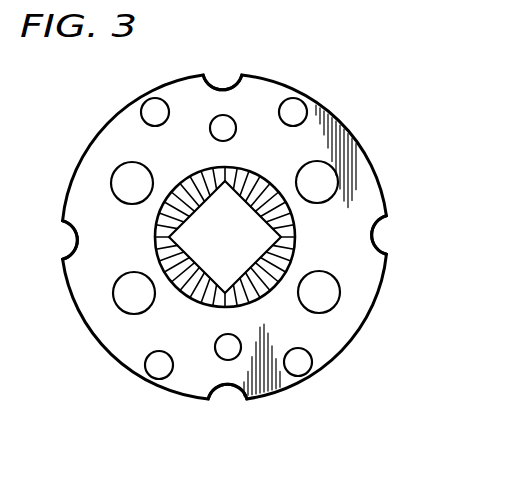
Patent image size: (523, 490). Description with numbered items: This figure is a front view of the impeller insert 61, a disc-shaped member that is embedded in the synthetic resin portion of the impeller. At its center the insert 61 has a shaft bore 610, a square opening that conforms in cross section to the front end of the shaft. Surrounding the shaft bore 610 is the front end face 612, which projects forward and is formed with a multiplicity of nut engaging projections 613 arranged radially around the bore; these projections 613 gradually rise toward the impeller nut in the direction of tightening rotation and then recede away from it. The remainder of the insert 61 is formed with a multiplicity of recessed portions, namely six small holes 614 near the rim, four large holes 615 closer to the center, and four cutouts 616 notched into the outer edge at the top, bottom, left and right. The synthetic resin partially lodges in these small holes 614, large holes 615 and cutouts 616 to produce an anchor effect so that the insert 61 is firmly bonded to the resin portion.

The impeller insert 61 is at (343, 112).
The shaft bore 610 is at (256, 229).
The front end face 612 is at (248, 183).
The nut engaging projections 613 is at (200, 177).
The small holes 614 is at (156, 98).
The large holes 615 is at (126, 162).
The cutouts 616 is at (217, 85).